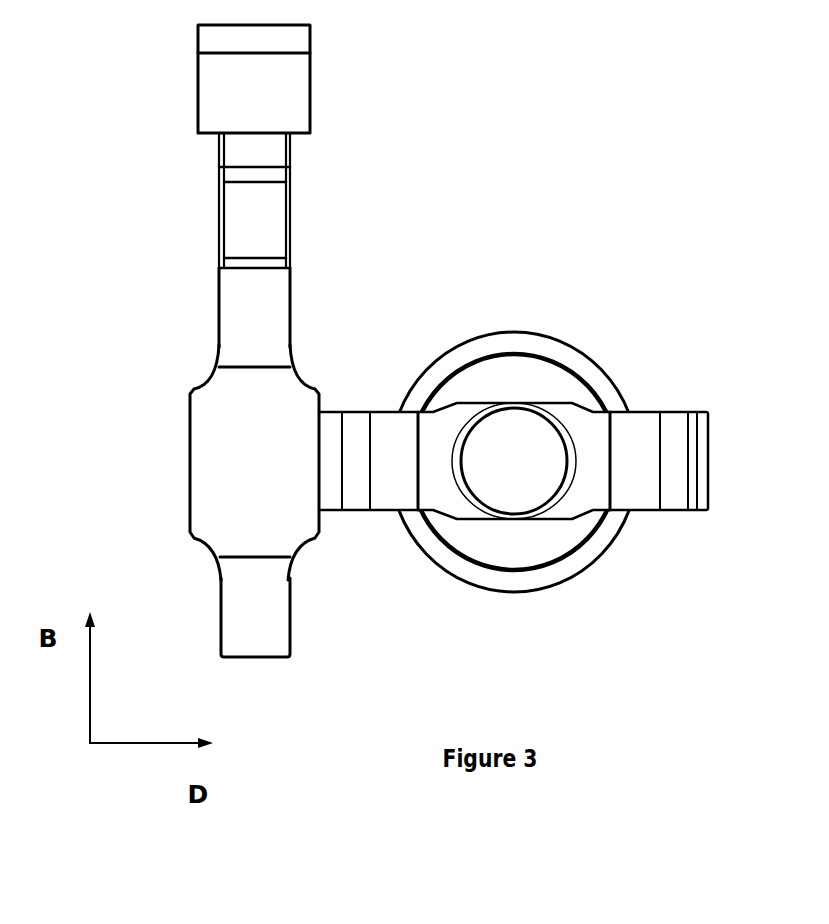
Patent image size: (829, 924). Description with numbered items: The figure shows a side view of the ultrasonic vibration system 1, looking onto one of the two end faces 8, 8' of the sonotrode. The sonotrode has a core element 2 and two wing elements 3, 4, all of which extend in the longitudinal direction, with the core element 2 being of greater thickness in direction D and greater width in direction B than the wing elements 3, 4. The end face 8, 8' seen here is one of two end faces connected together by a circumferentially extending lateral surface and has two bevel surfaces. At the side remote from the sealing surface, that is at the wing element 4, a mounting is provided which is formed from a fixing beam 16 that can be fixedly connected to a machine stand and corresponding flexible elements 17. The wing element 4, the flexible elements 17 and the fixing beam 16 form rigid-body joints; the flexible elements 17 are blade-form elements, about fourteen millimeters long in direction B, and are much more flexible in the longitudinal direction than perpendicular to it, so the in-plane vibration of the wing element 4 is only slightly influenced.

The ultrasonic vibration system 1 is at (655, 283).
The core element 2 is at (221, 462).
The wing element 3 is at (302, 697).
The wing element 4 is at (286, 310).
The end face 8 is at (254, 462).
The end face 8' is at (254, 317).
The fixing beam 16 is at (297, 90).
The flexible elements 17 is at (258, 210).